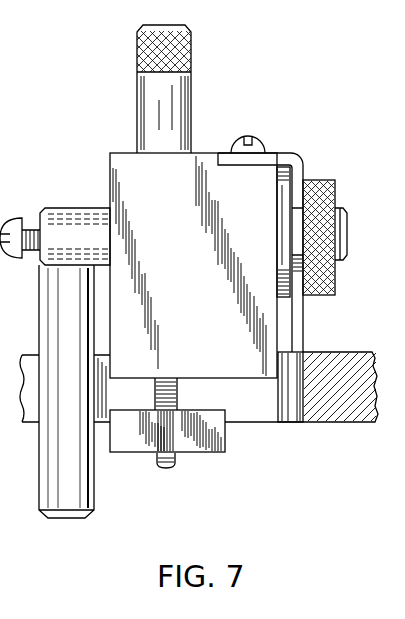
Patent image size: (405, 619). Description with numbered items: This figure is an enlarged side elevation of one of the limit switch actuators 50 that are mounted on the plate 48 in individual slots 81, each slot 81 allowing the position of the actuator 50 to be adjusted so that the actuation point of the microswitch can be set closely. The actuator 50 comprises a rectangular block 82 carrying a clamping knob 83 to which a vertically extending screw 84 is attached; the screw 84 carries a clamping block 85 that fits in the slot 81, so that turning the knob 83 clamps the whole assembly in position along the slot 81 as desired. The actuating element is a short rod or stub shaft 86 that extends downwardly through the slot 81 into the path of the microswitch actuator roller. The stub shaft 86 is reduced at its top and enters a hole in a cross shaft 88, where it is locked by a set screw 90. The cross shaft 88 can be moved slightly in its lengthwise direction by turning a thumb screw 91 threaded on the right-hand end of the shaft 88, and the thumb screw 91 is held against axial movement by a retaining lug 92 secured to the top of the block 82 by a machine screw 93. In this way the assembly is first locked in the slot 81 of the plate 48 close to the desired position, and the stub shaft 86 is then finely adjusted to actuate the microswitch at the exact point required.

The switch actuator 50 is at (96, 172).
The block 82 is at (128, 168).
The clamping knob 83 is at (178, 107).
The retaining lug 92 is at (292, 160).
The machine screw 93 is at (260, 146).
The thumb screw 91 is at (318, 183).
The cross shaft 88 is at (83, 215).
The set screw 90 is at (15, 217).
The stub shaft 86 is at (45, 485).
The plate 48 is at (328, 413).
The slot 81 is at (305, 356).
The clamping block 85 is at (213, 432).
The screw 84 is at (155, 457).